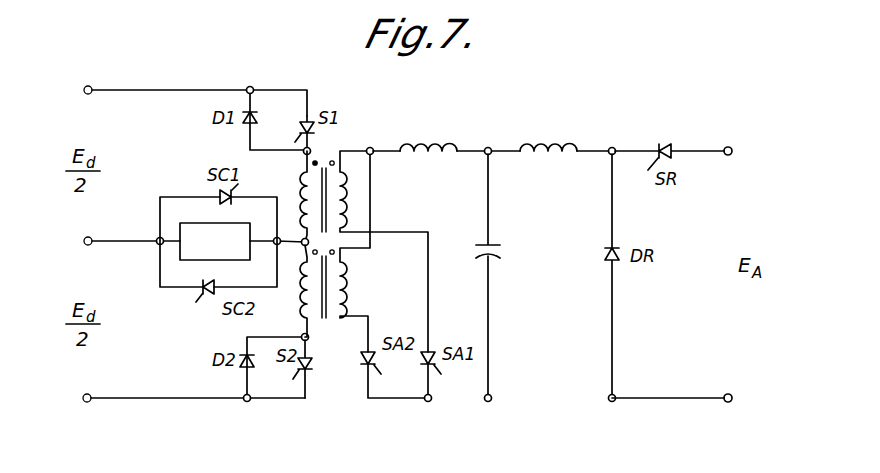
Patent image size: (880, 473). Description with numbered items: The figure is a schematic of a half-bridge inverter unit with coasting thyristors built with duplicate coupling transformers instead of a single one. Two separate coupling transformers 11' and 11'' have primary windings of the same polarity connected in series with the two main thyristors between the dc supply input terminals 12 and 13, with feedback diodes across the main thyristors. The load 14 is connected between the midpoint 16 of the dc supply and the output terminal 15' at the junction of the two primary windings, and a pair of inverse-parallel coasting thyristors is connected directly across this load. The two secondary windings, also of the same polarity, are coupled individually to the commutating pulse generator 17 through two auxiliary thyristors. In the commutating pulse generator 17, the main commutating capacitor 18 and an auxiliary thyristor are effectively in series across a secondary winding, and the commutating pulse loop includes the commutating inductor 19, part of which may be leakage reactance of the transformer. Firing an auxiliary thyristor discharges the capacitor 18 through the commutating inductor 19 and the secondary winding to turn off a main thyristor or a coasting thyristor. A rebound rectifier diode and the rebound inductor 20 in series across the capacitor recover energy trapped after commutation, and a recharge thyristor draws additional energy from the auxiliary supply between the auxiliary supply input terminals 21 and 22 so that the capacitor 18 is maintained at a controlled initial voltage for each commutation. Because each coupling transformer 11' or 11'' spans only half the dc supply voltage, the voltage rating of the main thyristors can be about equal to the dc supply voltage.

The coupling transformer 11' is at (380, 232).
The coupling transformer 11'' is at (375, 251).
The dc supply input terminal 12 is at (92, 87).
The dc supply input terminal 13 is at (89, 402).
The load 14 is at (196, 223).
The output terminal 15' is at (298, 244).
The midpoint of the dc supply 16 is at (95, 236).
The commutating pulse generator 17 is at (498, 144).
The main commutating capacitor 18 is at (503, 252).
The commutating inductor 19 is at (425, 158).
The rebound inductor 20 is at (553, 158).
The auxiliary supply input terminal 21 is at (729, 146).
The auxiliary supply input terminal 22 is at (726, 402).